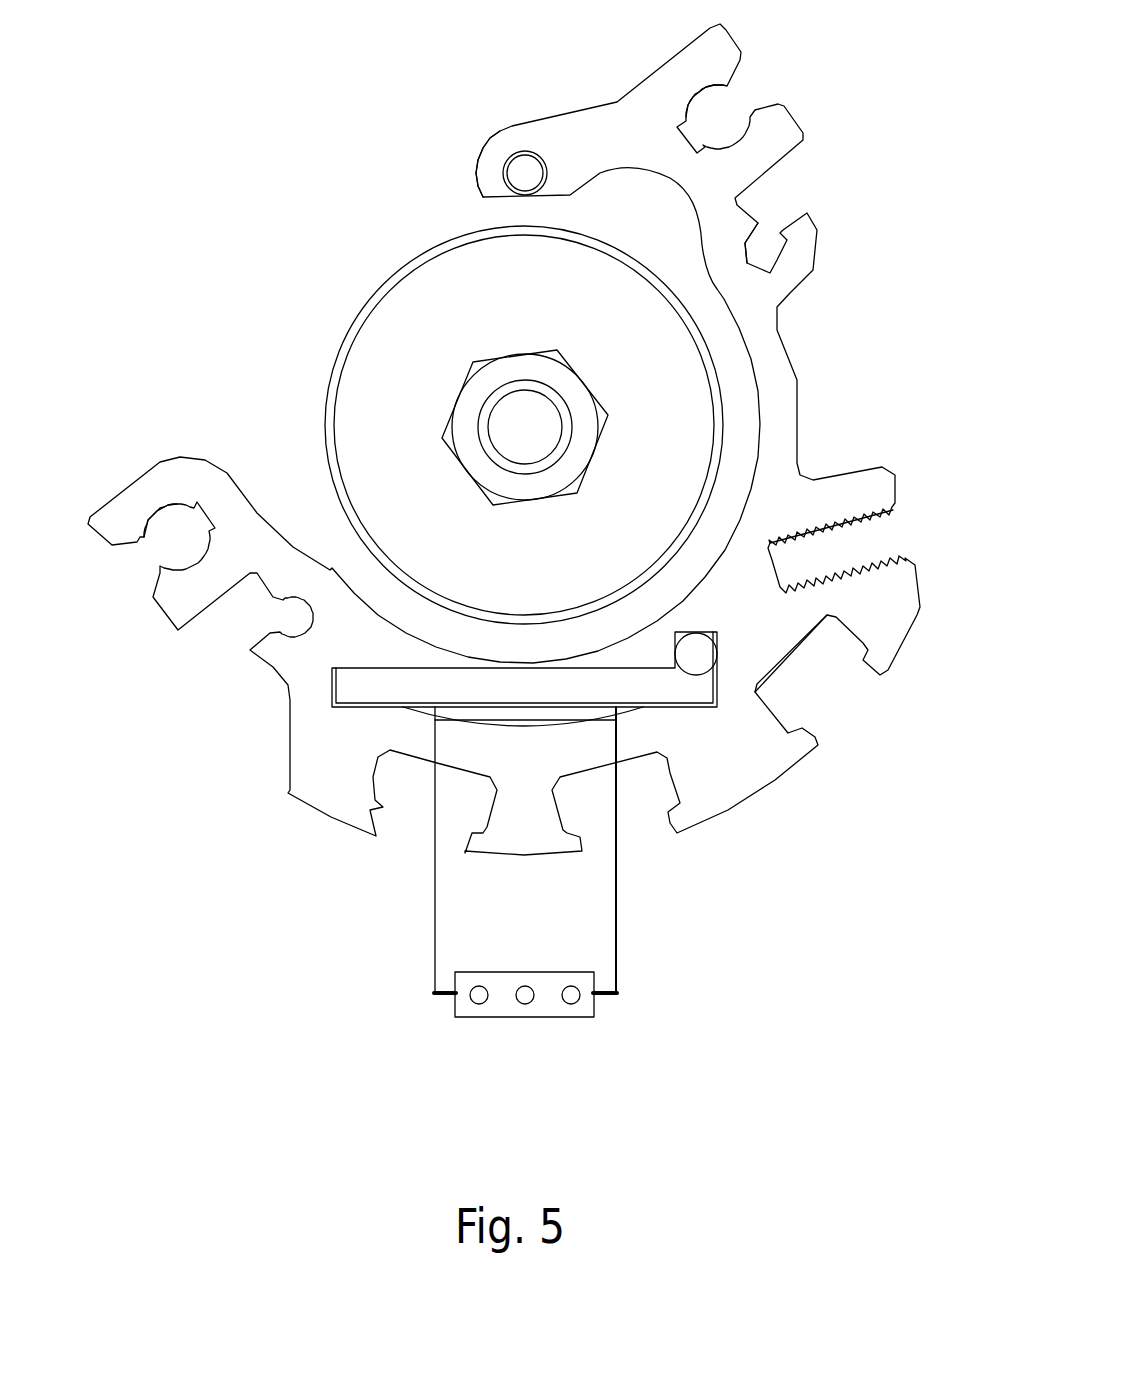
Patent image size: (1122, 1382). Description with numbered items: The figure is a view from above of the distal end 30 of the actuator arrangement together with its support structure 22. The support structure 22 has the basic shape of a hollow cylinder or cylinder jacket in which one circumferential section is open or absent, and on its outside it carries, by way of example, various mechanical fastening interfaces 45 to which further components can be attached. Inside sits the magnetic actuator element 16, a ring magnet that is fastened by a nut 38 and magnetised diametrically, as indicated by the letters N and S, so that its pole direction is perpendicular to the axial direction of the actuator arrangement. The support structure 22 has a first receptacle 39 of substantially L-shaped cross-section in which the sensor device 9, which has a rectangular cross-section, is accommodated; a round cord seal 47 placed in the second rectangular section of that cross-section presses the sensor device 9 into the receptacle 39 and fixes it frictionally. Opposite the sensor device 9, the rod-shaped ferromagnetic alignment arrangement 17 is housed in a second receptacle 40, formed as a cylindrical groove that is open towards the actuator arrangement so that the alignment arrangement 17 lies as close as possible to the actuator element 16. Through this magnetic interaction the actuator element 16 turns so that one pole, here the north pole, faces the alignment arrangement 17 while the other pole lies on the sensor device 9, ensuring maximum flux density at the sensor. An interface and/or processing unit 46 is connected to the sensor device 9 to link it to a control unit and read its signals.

The distal end 30 is at (253, 139).
The support structure 22 is at (622, 130).
The mechanical fastening interfaces 45 is at (718, 128).
The magnetic alignment arrangement 17 is at (518, 174).
The second receptacle 40 is at (497, 183).
The nut 38 is at (467, 427).
The magnetic actuator element 16 is at (326, 409).
The first receptacle 39 is at (332, 692).
The sensor device 9 is at (373, 692).
The round cord seal 47 is at (698, 656).
The interface and/or processing unit 46 is at (585, 1011).